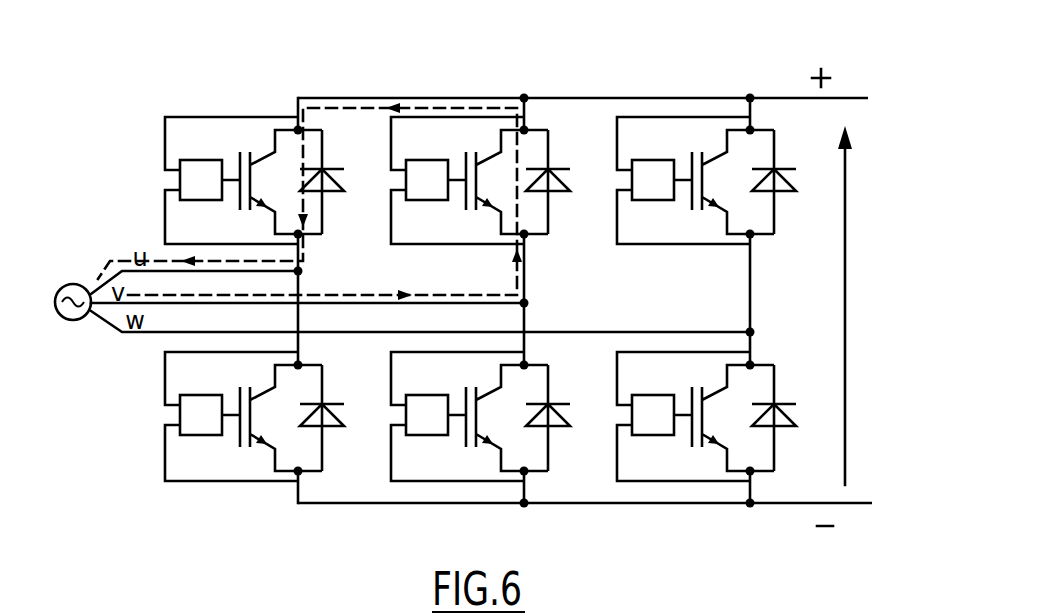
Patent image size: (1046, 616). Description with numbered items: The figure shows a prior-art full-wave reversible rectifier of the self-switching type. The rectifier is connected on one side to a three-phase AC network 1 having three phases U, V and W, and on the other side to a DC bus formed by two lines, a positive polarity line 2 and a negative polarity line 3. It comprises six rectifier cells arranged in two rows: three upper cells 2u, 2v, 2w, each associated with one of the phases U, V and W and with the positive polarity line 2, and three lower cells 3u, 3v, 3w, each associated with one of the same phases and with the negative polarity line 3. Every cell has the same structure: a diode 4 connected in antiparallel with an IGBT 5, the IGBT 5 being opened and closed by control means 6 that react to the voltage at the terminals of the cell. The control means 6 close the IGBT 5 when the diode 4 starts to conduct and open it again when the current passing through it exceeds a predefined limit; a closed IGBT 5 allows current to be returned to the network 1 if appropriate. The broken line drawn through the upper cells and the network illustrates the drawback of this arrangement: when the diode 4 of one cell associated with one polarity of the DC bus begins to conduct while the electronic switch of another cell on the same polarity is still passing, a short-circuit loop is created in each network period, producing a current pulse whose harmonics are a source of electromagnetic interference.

The three-phase AC network 1 is at (82, 320).
The positive polarity line 2 is at (847, 97).
The negative polarity line 3 is at (862, 504).
The rectifier cell 2u is at (218, 114).
The rectifier cell 2v is at (449, 90).
The rectifier cell 2w is at (694, 89).
The rectifier cell 3u is at (285, 495).
The rectifier cell 3v is at (549, 480).
The rectifier cell 3w is at (767, 486).
The diode 4 is at (329, 192).
The IGBT 5 is at (240, 204).
The control means 6 is at (200, 166).